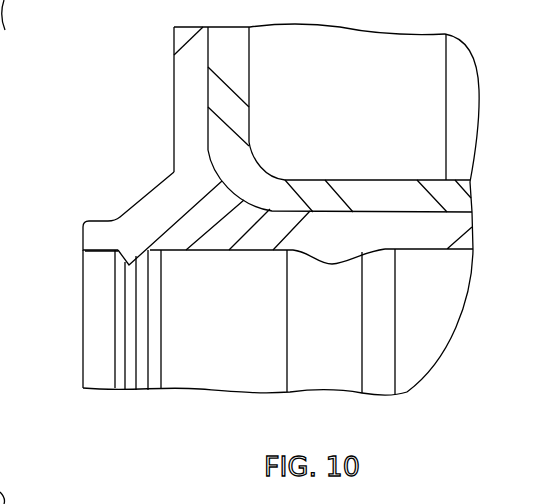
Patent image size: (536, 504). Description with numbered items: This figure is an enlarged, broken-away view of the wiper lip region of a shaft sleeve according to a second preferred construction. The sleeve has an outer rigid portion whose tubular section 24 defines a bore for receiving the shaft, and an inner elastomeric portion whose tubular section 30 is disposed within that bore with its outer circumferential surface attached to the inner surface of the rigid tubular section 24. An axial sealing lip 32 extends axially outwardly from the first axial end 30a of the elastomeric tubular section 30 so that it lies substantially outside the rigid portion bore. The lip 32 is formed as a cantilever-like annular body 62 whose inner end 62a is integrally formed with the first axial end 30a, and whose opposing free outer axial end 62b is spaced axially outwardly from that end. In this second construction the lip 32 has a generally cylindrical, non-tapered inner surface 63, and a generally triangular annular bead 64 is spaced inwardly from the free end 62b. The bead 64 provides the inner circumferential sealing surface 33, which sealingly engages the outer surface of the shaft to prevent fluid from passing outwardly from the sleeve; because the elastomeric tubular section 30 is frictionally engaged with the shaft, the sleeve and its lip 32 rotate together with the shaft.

The tubular section 24 is at (376, 184).
The tubular section 30 is at (429, 244).
The first axial end 30a is at (213, 228).
The axial sealing lip 32 is at (110, 176).
The inner circumferential sealing surface 33 is at (132, 360).
The cantilever-like annular body 62 is at (166, 242).
The inner end 62a is at (178, 187).
The free outer axial end 62b is at (95, 235).
The cylindrical inner surface 63 is at (93, 307).
The triangular annular bead 64 is at (88, 253).